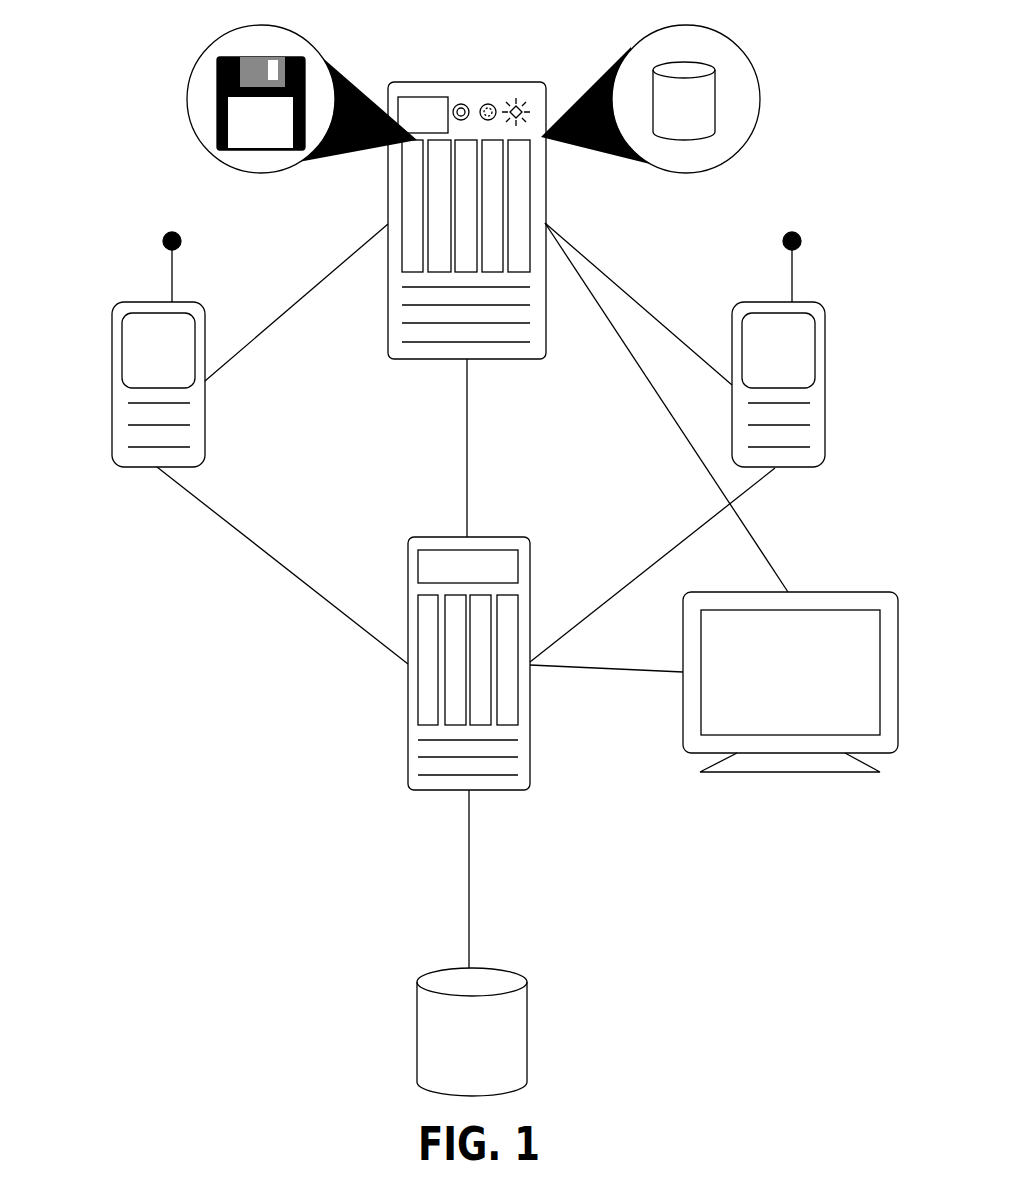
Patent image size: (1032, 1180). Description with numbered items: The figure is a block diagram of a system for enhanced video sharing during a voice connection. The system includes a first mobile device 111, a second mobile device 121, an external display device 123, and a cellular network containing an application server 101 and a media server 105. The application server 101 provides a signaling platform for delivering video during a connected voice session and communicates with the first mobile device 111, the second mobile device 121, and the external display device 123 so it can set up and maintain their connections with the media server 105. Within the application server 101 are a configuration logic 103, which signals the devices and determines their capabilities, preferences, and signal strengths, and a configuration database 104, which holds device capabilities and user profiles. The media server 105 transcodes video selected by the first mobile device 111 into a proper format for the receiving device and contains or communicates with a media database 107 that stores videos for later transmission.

The application server 101 is at (483, 197).
The configuration logic 103 is at (225, 90).
The configuration database 104 is at (720, 94).
The media server 105 is at (415, 663).
The media database 107 is at (527, 1032).
The first mobile device 111 is at (111, 349).
The second mobile device 121 is at (834, 349).
The external display device 123 is at (787, 706).